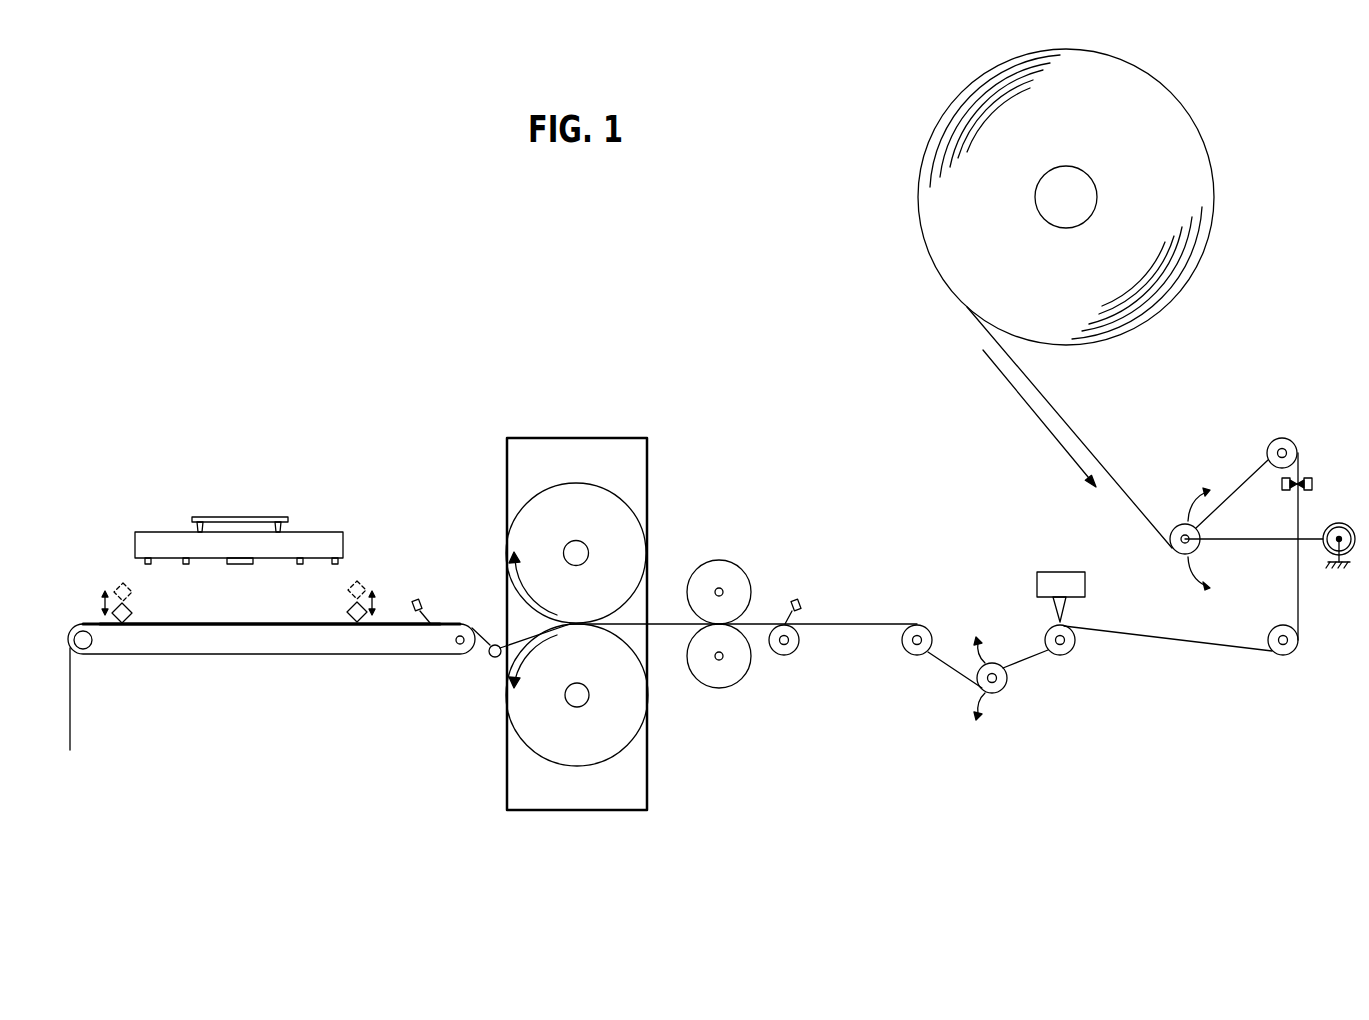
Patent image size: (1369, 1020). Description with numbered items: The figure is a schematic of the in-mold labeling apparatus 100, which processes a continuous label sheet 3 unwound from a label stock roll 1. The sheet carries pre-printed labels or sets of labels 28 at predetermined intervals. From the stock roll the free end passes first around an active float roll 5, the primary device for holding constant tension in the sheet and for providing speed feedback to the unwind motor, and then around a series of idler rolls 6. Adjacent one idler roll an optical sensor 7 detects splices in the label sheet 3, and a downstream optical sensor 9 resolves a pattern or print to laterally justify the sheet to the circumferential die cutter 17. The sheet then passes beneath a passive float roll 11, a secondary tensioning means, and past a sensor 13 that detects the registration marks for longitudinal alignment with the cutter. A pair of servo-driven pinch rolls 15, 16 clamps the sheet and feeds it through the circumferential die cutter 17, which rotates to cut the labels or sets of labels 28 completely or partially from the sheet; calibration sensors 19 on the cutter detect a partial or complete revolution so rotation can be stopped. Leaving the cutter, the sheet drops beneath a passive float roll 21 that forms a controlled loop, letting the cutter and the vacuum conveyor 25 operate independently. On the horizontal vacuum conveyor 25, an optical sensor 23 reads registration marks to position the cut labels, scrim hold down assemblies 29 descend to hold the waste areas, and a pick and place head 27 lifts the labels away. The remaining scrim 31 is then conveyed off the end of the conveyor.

The in-mold labeling apparatus 100 is at (612, 262).
The label stock roll 1 is at (1207, 157).
The label sheet 3 is at (1088, 448).
The active float roll 5 is at (1173, 551).
The idler rolls 6 is at (1272, 442).
The optical sensor 7 is at (1307, 477).
The optical sensor 9 is at (1060, 570).
The passive float roll 11 is at (1003, 692).
The sensor 13 is at (800, 600).
The pinch roll 15 is at (735, 563).
The pinch roll 16 is at (745, 675).
The circumferential die cutter 17 is at (573, 438).
The calibration sensors 19 is at (577, 489).
The passive float roll 21 is at (490, 658).
The optical sensor 23 is at (421, 600).
The vacuum conveyor 25 is at (283, 655).
The pick and place head 27 is at (263, 517).
The labels or sets of labels 28 is at (248, 623).
The scrim hold down assemblies 29 is at (103, 592).
The scrim 31 is at (72, 692).